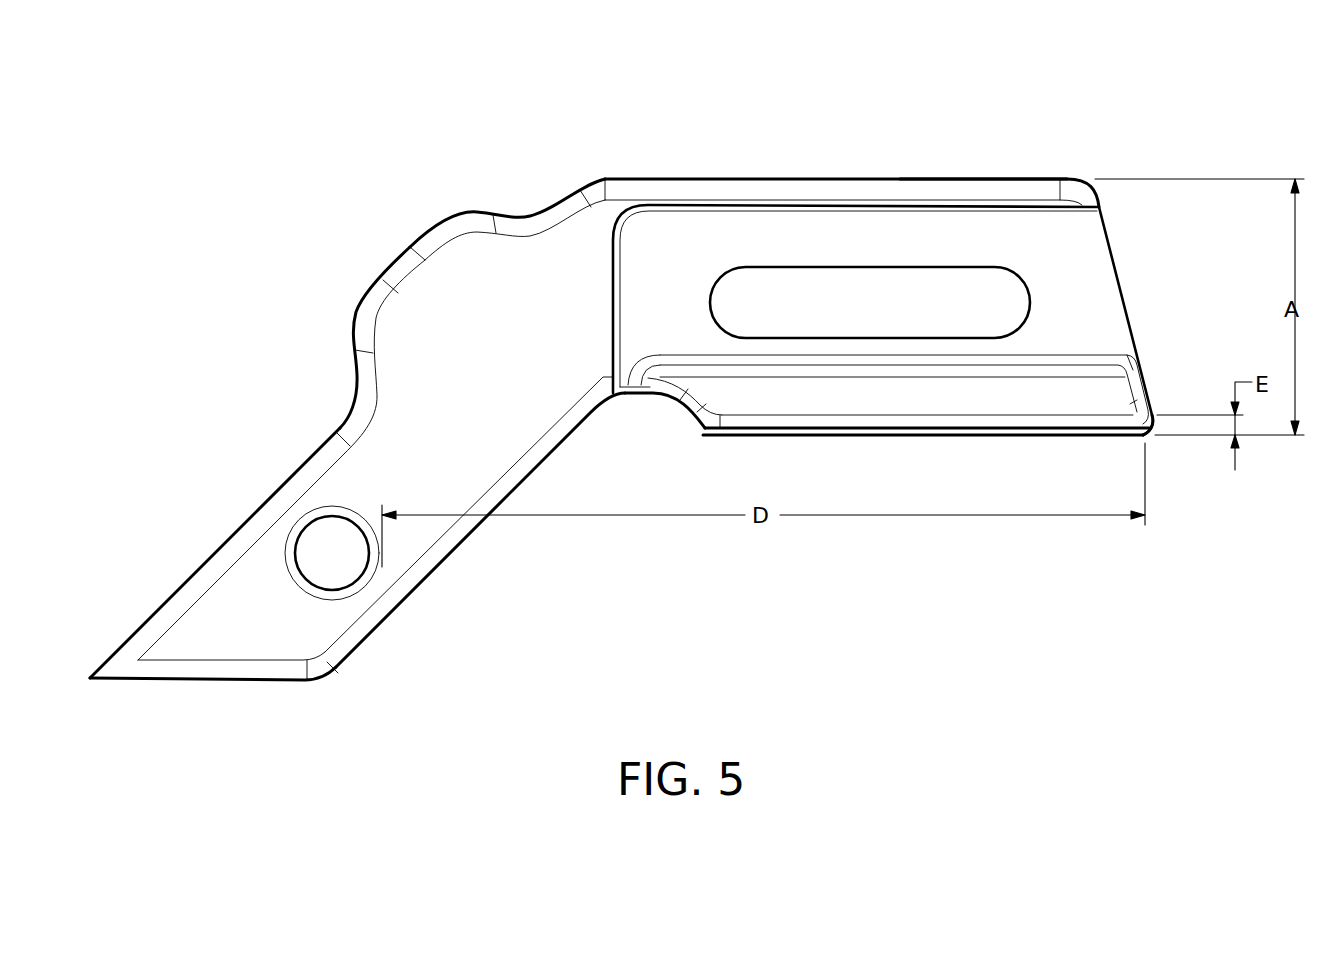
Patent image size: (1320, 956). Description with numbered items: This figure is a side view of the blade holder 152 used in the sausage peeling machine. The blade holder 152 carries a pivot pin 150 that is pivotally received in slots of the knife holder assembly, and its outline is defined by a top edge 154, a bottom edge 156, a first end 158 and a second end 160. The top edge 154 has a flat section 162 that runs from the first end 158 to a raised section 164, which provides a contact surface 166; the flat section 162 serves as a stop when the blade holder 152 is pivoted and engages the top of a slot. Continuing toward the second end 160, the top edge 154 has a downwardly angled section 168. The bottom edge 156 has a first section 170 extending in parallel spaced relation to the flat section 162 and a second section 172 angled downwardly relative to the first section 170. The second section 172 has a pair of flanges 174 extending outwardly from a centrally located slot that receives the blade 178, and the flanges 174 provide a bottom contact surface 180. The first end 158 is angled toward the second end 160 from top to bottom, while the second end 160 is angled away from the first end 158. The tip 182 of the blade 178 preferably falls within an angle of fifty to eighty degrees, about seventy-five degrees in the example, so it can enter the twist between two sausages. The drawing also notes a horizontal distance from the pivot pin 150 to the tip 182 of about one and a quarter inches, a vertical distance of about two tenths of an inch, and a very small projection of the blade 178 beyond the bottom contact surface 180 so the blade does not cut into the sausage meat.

The pivot pin 150 is at (335, 560).
The blade holder 152 is at (583, 115).
The top edge 154 is at (692, 178).
The bottom edge 156 is at (593, 413).
The first end 158 is at (180, 682).
The second end 160 is at (1125, 295).
The flat section 162 is at (208, 562).
The raised section 164 is at (422, 292).
The contact surface 166 is at (407, 244).
The downwardly angled section 168 is at (972, 178).
The first section 170 is at (445, 557).
The second section 172 is at (732, 418).
The flanges 174 is at (1102, 392).
The blade 178 is at (928, 430).
The bottom contact surface 180 is at (1000, 418).
The tip 182 is at (1147, 436).